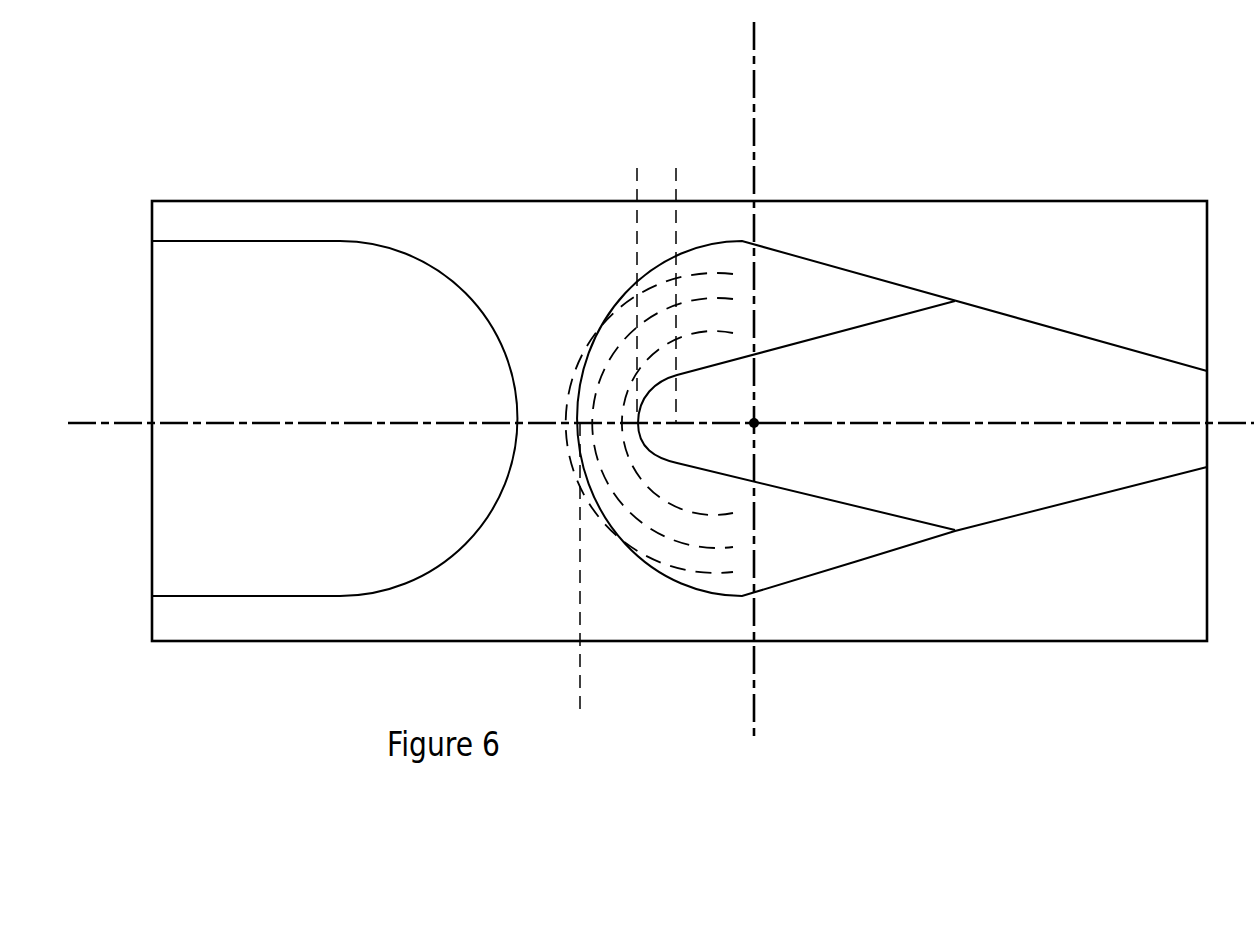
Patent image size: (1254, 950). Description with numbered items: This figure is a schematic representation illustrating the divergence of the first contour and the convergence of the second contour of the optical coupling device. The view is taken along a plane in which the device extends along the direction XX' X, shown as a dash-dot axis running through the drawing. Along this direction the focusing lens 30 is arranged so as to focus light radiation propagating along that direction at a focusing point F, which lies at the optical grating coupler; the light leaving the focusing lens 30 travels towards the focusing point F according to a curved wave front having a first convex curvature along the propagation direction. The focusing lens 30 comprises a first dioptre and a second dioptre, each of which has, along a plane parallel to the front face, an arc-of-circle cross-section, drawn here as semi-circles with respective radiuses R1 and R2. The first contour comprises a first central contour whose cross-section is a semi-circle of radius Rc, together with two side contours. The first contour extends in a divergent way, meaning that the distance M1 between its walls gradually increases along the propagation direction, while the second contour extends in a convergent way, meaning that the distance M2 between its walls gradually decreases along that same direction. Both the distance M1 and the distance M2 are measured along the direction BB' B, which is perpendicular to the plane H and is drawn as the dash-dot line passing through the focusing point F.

The lens 30 is at (558, 285).
The focal point F is at (754, 423).
The radius of curvature of first lens face R1 is at (506, 423).
The radius of curvature of second lens face R2 is at (744, 711).
The radius of curvature of central tip Rc is at (668, 170).
The first beam width M1 is at (790, 481).
The second beam width M2 is at (1080, 490).
The section plane B-B' B is at (779, 381).
The optical axis X-X' X is at (661, 402).